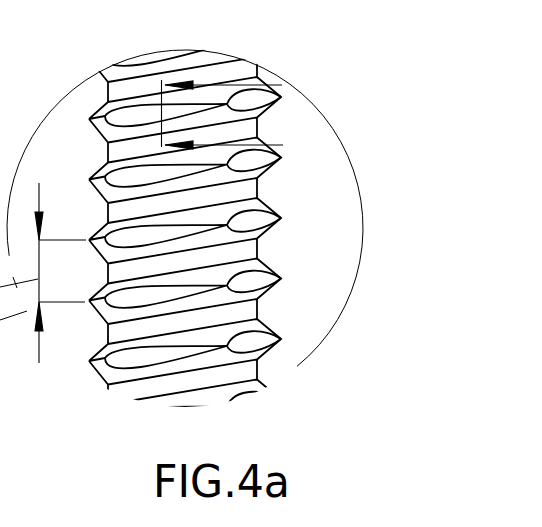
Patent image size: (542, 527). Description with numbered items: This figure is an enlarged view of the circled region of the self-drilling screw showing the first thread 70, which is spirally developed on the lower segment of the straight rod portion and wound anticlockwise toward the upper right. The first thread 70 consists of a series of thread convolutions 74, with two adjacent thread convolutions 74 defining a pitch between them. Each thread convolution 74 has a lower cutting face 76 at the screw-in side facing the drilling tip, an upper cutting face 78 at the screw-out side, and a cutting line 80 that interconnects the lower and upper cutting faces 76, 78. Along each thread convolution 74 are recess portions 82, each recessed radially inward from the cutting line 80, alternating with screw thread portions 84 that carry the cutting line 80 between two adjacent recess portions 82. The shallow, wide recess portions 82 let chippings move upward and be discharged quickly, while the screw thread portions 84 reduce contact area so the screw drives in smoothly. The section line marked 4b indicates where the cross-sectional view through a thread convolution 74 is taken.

The first thread 70 is at (262, 224).
The thread convolution 74 is at (255, 262).
The lower cutting face 76 is at (220, 357).
The upper cutting face 78 is at (97, 337).
The cutting line 80 is at (210, 345).
The recess portion 82 is at (148, 118).
The screw thread portion 84 is at (218, 217).
The section line 4b- 4b is at (254, 108).